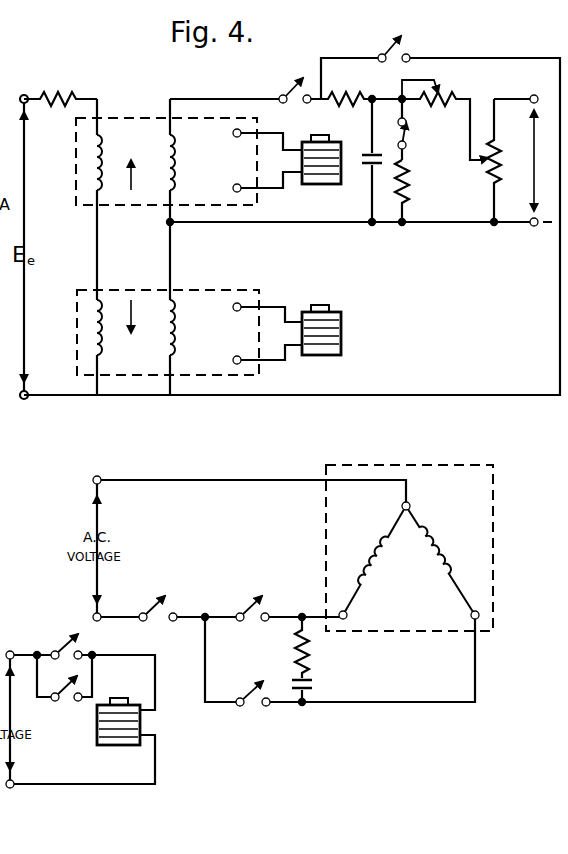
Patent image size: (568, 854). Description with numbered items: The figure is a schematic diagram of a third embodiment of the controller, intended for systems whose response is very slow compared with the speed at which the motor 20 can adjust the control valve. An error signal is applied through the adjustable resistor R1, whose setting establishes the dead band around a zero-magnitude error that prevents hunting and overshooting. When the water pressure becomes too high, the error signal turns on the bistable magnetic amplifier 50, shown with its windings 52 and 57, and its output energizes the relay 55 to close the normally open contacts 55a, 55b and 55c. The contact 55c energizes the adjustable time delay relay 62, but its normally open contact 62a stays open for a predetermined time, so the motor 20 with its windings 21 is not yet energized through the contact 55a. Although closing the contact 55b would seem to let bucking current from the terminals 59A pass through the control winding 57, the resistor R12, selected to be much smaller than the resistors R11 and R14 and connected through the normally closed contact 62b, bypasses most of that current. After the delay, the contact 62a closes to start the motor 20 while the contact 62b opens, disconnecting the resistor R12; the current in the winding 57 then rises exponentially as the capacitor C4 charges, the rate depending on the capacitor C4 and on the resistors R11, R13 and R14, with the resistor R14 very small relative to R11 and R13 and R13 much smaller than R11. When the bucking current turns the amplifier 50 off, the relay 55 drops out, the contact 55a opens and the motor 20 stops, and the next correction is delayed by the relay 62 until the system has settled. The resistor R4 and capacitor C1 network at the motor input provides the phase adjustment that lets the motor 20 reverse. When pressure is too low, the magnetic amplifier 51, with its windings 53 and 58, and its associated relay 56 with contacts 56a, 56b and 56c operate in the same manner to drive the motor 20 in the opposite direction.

The adjustable resistor R1 is at (60, 89).
The bistable magnetic amplifier 50 is at (131, 118).
The relay winding 52 is at (90, 171).
The control winding 57 is at (178, 173).
The relay 55 is at (330, 180).
The normally open contact 55b is at (280, 82).
The relay contact 56b is at (398, 37).
The resistor R11 is at (361, 90).
The capacitor C4 is at (365, 160).
The resistor R13 is at (442, 117).
The normally closed contact 62b is at (406, 138).
The resistor R12 is at (419, 191).
The resistor R14 is at (481, 160).
The terminals 59A is at (524, 166).
The magnetic amplifier 51 is at (131, 373).
The relay winding 53 is at (90, 342).
The winding 58 is at (178, 332).
The relay 56 is at (340, 331).
The motor 20 is at (492, 516).
The motor windings 21 is at (440, 571).
The normally open contact 62a is at (158, 605).
The normally open contact 55a is at (255, 605).
The relay contact 56a is at (251, 707).
The resistor R4 is at (288, 647).
The capacitor C1 is at (315, 687).
The normally open contact 55c is at (63, 647).
The relay contact 56c is at (69, 702).
The adjustable time delay relay 62 is at (142, 729).